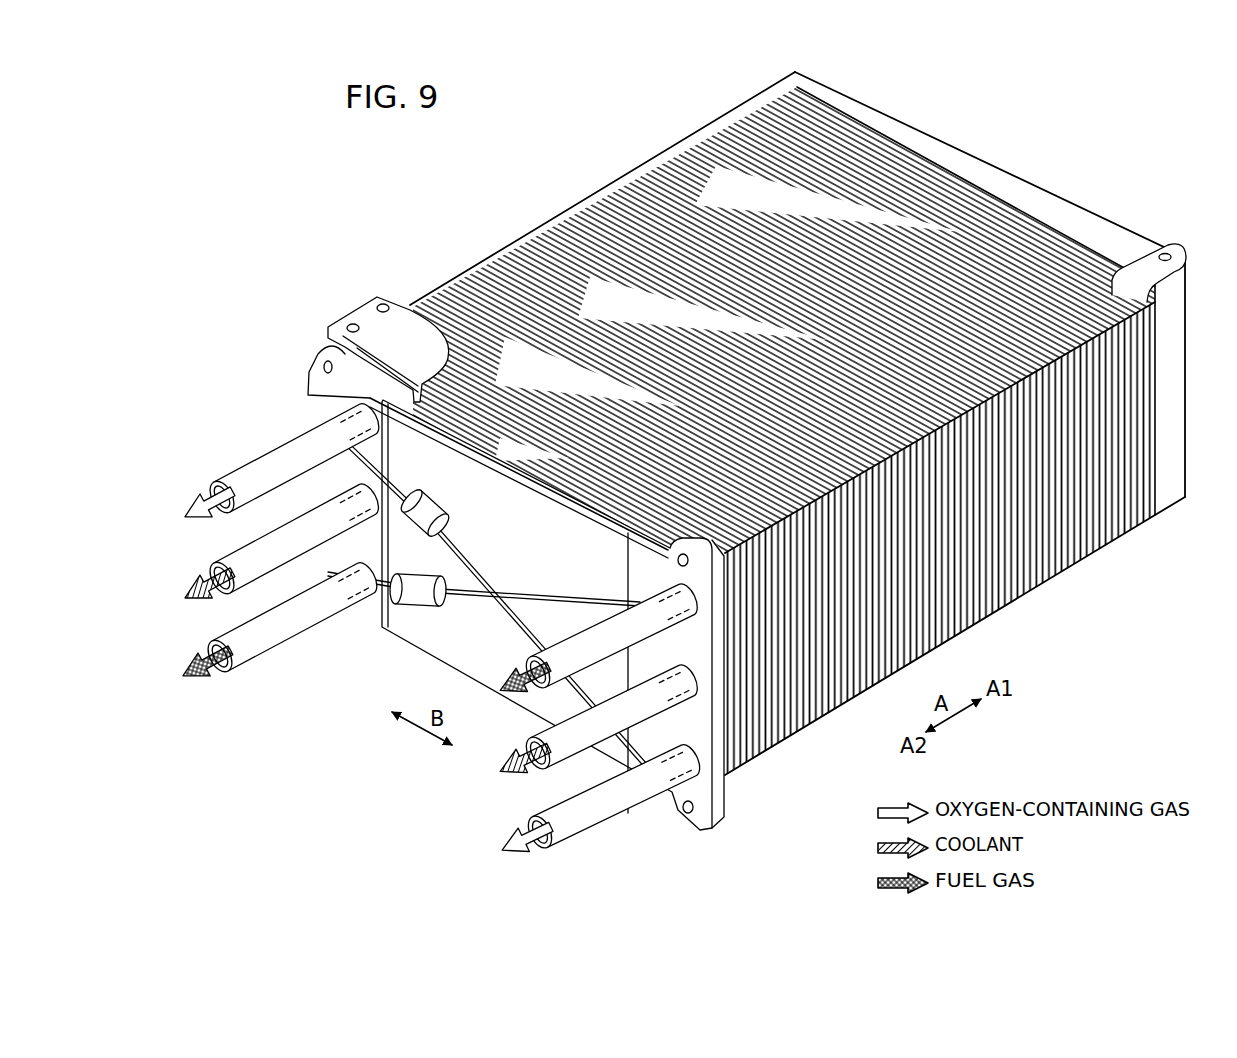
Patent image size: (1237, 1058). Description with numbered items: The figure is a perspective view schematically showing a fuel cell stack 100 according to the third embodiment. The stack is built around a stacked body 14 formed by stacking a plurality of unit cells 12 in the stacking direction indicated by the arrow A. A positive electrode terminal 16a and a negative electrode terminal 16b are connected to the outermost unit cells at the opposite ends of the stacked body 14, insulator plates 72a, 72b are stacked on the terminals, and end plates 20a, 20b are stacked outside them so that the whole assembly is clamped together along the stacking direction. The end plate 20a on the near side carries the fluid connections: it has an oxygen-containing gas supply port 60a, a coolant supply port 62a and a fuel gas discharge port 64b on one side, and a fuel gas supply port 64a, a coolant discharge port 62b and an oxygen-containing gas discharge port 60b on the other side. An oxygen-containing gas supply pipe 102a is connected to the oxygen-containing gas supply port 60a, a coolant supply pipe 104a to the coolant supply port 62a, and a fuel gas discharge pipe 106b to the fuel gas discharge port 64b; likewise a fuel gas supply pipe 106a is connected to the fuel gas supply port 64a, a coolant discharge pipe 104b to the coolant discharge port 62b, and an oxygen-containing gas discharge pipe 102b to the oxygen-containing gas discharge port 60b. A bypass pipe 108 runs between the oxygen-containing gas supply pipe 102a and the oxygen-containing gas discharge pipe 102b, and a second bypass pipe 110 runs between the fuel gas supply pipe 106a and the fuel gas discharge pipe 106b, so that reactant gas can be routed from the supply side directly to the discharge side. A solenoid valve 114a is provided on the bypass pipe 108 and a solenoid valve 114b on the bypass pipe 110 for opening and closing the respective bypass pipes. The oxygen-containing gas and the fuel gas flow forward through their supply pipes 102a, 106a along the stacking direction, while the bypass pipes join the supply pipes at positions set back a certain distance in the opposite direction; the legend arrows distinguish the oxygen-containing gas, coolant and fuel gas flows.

The fuel cell stack 100 is at (672, 467).
The unit cells 12 is at (579, 202).
The stacked body 14 is at (782, 423).
The positive electrode terminal 16a is at (350, 297).
The negative electrode terminal 16b is at (1147, 268).
The end plate 20a is at (516, 588).
The end plate 20b is at (955, 423).
The insulator plate 72a is at (540, 475).
The insulator plate 72b is at (1030, 222).
The oxygen-containing gas supply port 60a is at (294, 458).
The oxygen-containing gas discharge port 60b is at (614, 796).
The coolant supply port 62a is at (294, 538).
The coolant discharge port 62b is at (612, 716).
The fuel gas supply port 64a is at (612, 635).
The fuel gas discharge port 64b is at (292, 617).
The oxygen-containing gas supply pipe 102a is at (232, 474).
The oxygen-containing gas discharge pipe 102b is at (543, 804).
The coolant supply pipe 104a is at (237, 549).
The coolant discharge pipe 104b is at (538, 722).
The fuel gas supply pipe 106a is at (530, 647).
The fuel gas discharge pipe 106b is at (238, 621).
The bypass pipe 108 is at (495, 587).
The bypass pipe 110 is at (535, 595).
The solenoid valve 114a is at (432, 512).
The solenoid valve 114b is at (413, 583).